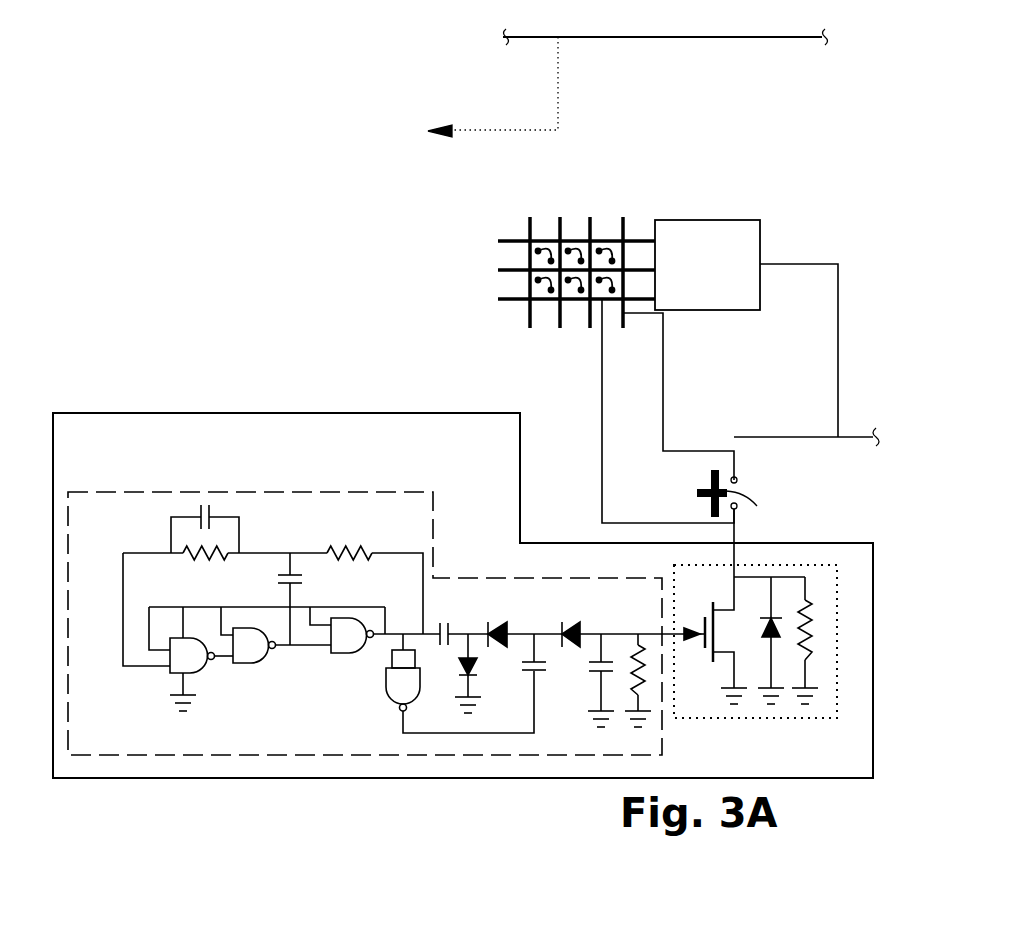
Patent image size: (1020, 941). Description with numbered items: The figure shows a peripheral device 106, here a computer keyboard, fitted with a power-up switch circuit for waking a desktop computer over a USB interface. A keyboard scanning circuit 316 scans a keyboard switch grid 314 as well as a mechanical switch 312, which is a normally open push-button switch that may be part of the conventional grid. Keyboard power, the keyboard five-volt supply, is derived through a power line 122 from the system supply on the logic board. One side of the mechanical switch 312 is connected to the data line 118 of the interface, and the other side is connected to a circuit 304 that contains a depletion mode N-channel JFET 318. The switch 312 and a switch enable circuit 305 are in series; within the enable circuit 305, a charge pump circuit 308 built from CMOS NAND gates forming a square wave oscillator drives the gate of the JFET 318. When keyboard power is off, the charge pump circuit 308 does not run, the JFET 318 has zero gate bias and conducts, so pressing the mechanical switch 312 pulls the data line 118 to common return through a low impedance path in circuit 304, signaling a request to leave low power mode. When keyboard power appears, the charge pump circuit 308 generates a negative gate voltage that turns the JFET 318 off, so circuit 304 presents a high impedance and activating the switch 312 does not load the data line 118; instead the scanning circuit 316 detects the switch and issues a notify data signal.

The peripheral device 106 is at (488, 478).
The data line 118 is at (848, 437).
The power line 122 is at (763, 40).
The JFET circuit 304 is at (760, 718).
The switch enable circuit 305 is at (243, 413).
The charge pump circuit 308 is at (338, 492).
The mechanical switch 312 is at (738, 498).
The keyboard switch grid 314 is at (528, 226).
The keyboard scanning circuit 316 is at (700, 220).
The JFET 318 is at (720, 632).